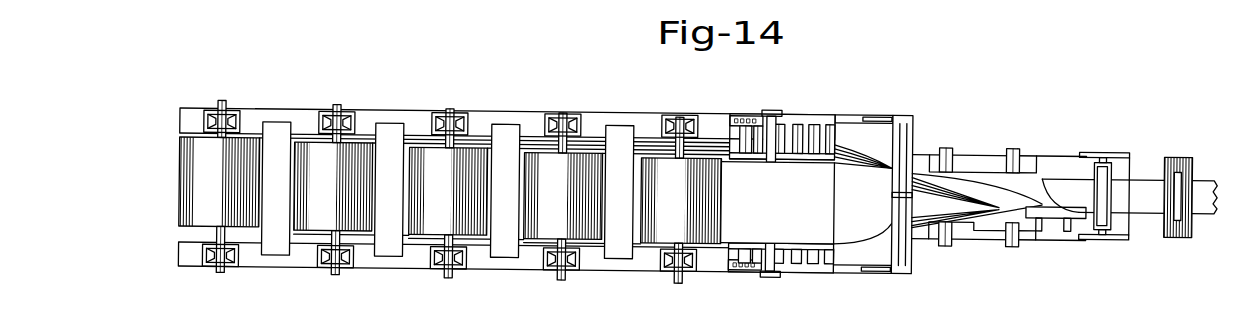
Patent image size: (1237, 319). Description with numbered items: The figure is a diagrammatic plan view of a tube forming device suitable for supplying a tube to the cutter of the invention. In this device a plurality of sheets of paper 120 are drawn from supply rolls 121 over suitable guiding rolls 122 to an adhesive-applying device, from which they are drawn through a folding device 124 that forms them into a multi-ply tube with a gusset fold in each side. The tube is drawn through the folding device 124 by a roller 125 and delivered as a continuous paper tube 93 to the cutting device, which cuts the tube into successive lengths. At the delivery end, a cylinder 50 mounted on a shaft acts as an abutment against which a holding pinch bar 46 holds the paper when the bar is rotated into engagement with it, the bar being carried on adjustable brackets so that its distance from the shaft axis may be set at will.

The supply rolls 121 is at (198, 212).
The sheets of paper 120 is at (737, 233).
The guiding rolls 122 is at (808, 128).
The folding device 124 is at (1022, 223).
The roller 125 is at (1095, 220).
The paper tube 93 is at (1148, 210).
The cylinder 50 is at (1180, 230).
The holding pinch bar 46 is at (1178, 195).